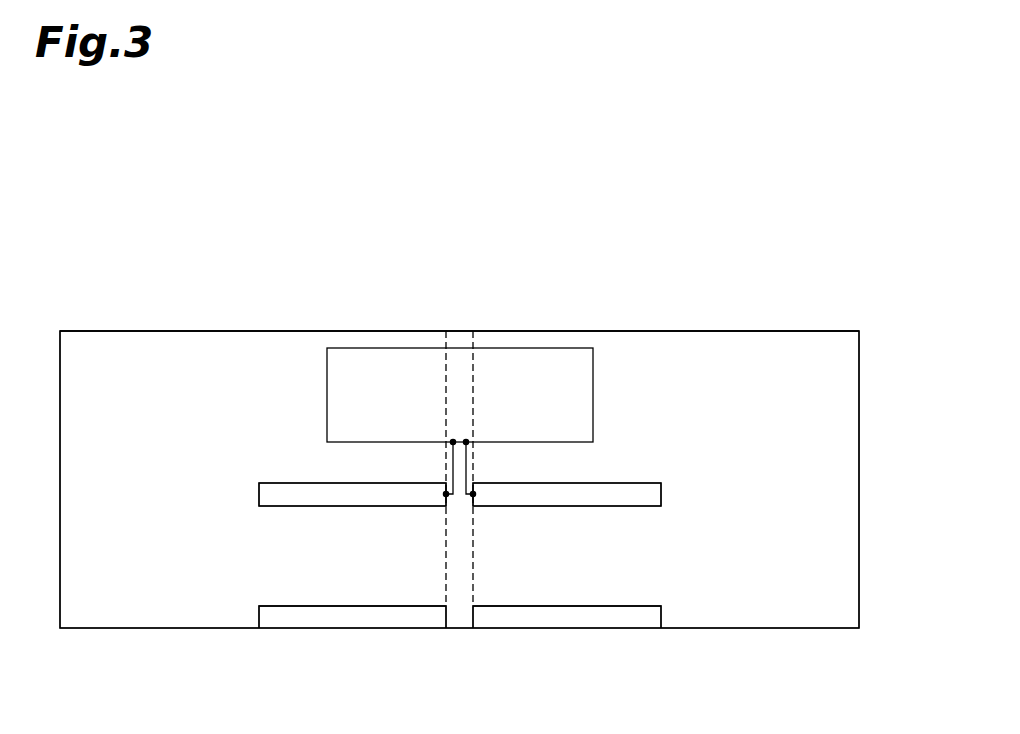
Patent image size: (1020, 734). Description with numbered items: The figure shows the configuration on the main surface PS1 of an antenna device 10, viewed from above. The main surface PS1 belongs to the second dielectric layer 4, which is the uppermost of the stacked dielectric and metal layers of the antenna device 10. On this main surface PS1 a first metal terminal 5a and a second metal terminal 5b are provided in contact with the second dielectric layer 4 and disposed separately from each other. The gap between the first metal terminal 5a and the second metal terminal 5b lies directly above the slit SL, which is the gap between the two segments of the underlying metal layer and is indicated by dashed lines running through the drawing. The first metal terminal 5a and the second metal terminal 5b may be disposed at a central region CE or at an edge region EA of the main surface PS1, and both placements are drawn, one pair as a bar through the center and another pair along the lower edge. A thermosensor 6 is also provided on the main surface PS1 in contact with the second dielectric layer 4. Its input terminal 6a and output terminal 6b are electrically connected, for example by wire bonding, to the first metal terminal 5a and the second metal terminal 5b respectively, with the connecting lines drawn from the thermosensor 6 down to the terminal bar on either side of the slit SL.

The antenna device 10 is at (784, 221).
The second dielectric layer 4 is at (60, 501).
The main surface PS1 is at (149, 348).
The thermosensor 6 is at (568, 348).
The input terminal 6a is at (453, 442).
The output terminal 6b is at (466, 442).
The first metal terminal 5a is at (276, 496).
The second metal terminal 5b is at (632, 496).
The central region CE is at (686, 498).
The edge region EA is at (686, 618).
The slit SL is at (457, 611).